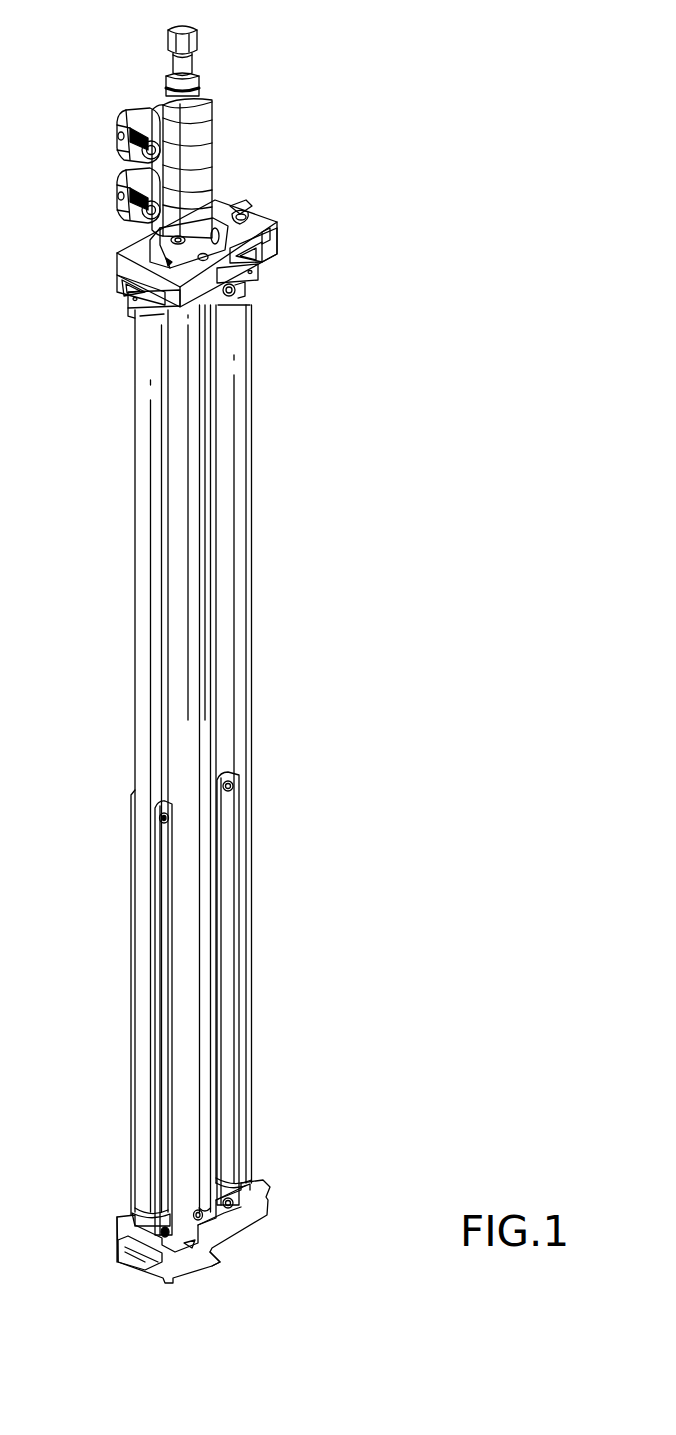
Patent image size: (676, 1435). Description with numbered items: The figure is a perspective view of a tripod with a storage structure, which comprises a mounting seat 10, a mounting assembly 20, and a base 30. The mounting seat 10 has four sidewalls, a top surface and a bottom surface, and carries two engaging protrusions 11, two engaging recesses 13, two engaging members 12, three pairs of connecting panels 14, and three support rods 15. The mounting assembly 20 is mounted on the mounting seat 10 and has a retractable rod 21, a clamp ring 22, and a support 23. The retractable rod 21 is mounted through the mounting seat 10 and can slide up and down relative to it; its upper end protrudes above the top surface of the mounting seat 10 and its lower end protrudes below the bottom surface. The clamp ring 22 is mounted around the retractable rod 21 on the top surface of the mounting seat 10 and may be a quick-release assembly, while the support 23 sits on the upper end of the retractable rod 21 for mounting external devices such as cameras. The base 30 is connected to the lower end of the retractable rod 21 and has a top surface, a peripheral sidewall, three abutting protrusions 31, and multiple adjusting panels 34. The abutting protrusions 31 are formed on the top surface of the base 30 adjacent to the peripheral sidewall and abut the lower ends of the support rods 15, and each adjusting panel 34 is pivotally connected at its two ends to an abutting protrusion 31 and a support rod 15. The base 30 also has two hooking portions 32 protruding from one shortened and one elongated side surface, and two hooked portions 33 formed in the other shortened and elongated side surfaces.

The mounting seat 10 is at (292, 233).
The engaging protrusion 11 is at (258, 284).
The engaging member 12 is at (262, 258).
The engaging recess 13 is at (243, 217).
The connecting panel 14 is at (232, 296).
The support rod 15 is at (150, 545).
The mounting assembly 20 is at (222, 98).
The retractable rod 21 is at (190, 710).
The clamp ring 22 is at (150, 258).
The support 23 is at (144, 119).
The base 30 is at (106, 1245).
The abutting protrusion 31 is at (137, 1222).
The hooking portion 32 is at (137, 1266).
The hooked portion 33 is at (203, 1263).
The adjusting panel 34 is at (230, 1012).